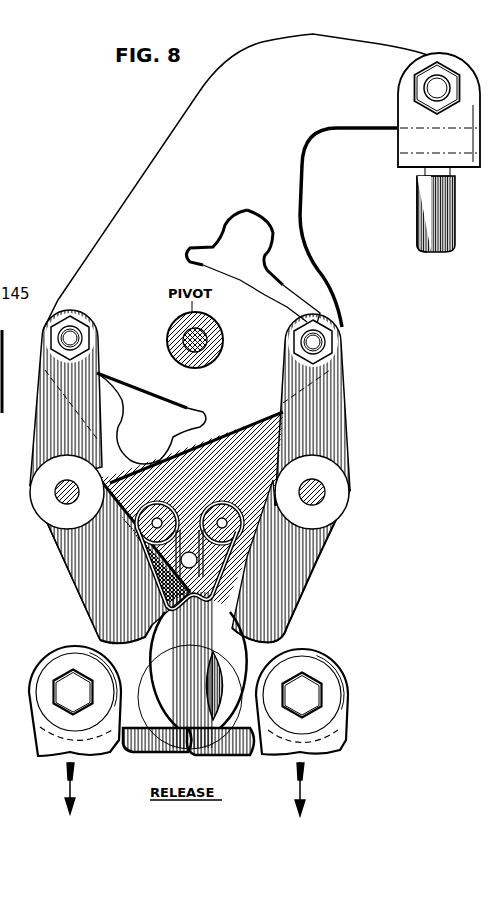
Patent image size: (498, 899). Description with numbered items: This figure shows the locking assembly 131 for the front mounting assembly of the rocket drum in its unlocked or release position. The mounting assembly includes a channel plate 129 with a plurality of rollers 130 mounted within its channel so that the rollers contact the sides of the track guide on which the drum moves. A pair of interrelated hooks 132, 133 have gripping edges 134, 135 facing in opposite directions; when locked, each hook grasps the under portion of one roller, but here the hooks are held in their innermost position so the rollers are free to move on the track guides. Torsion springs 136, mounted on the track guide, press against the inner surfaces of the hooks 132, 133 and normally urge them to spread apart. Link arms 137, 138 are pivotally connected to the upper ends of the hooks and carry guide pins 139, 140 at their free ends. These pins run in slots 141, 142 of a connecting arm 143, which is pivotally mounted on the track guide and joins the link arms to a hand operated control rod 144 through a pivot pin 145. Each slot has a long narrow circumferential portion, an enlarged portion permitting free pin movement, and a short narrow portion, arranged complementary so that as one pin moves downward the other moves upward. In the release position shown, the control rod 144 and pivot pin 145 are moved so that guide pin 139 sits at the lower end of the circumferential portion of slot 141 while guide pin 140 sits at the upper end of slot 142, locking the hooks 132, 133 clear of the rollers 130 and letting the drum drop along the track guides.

The channel plate 129 is at (42, 738).
The rollers 130 is at (34, 673).
The locking assembly 131 is at (128, 190).
The hook 132 is at (288, 602).
The hook 133 is at (88, 598).
The gripping edge 134 is at (230, 726).
The gripping edge 135 is at (150, 726).
The torsion springs 136 is at (190, 532).
The link arm 137 is at (335, 447).
The link arm 138 is at (44, 437).
The guide pin 139 is at (320, 343).
The guide pin 140 is at (72, 333).
The slot 141 is at (288, 292).
The slot 142 is at (123, 395).
The connecting arm 143 is at (185, 128).
The control rod 144 is at (417, 212).
The pivot pin 145 is at (440, 76).